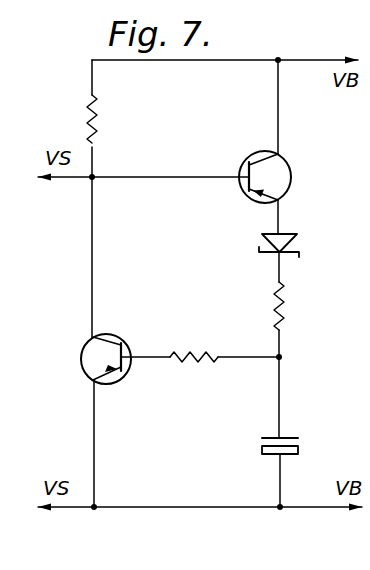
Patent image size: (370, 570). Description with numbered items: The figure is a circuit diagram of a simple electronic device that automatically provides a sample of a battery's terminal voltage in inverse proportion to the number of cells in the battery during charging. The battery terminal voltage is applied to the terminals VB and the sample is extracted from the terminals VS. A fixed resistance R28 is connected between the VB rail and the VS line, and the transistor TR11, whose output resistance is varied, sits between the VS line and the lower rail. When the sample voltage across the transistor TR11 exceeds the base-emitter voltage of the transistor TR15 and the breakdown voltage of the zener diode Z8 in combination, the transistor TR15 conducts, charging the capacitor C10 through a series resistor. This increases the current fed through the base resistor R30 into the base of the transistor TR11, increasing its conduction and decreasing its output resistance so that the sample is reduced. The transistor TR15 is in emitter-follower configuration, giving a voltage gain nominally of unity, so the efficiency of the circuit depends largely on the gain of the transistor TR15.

The fixed resistance R28 is at (115, 119).
The transistor TR15 is at (250, 153).
The zener diode Z8 is at (258, 237).
The transistor TR11 is at (117, 334).
The base resistor R30 is at (194, 374).
The capacitor C10 is at (258, 445).